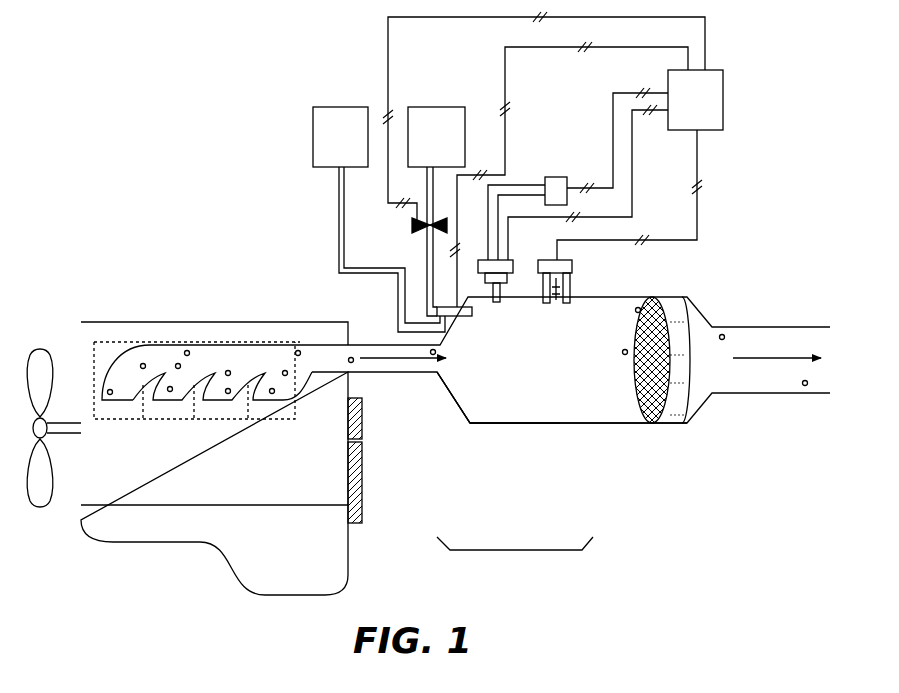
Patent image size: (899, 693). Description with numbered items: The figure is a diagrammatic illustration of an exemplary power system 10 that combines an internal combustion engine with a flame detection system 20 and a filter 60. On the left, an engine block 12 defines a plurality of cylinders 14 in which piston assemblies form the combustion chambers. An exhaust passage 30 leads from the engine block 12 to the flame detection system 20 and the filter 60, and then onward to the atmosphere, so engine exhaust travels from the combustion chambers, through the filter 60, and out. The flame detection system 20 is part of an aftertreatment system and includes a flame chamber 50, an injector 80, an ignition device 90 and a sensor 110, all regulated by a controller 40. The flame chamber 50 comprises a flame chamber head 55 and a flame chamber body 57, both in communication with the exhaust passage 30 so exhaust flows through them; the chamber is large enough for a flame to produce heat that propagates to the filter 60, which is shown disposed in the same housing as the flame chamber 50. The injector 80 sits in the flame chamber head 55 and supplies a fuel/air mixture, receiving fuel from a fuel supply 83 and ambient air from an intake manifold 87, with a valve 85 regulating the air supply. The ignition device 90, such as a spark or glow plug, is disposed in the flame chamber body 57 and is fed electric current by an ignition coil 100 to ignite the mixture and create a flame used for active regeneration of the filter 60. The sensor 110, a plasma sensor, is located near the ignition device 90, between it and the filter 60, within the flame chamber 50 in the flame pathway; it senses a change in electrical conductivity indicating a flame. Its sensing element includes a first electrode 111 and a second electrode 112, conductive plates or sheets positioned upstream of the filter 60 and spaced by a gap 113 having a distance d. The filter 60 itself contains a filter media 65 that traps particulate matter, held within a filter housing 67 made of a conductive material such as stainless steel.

The power system 10 is at (148, 221).
The engine block 12 is at (302, 476).
The cylinders 14 is at (120, 420).
The flame detection system 20 is at (513, 550).
The exhaust passage 30 is at (385, 342).
The controller 40 is at (685, 109).
The flame chamber 50 is at (470, 423).
The flame chamber head 55 is at (458, 398).
The flame chamber body 57 is at (548, 423).
The filter 60 is at (669, 362).
The filter media 65 is at (650, 340).
The filter housing 67 is at (682, 395).
The injector 80 is at (460, 316).
The fuel supply 83 is at (330, 146).
The valve 85 is at (412, 225).
The intake manifold 87 is at (427, 146).
The ignition device 90 is at (513, 267).
The ignition coil 100 is at (556, 177).
The sensor 110 is at (577, 298).
The first electrode 111 is at (545, 305).
The second electrode 112 is at (567, 303).
The gap 113 is at (560, 286).